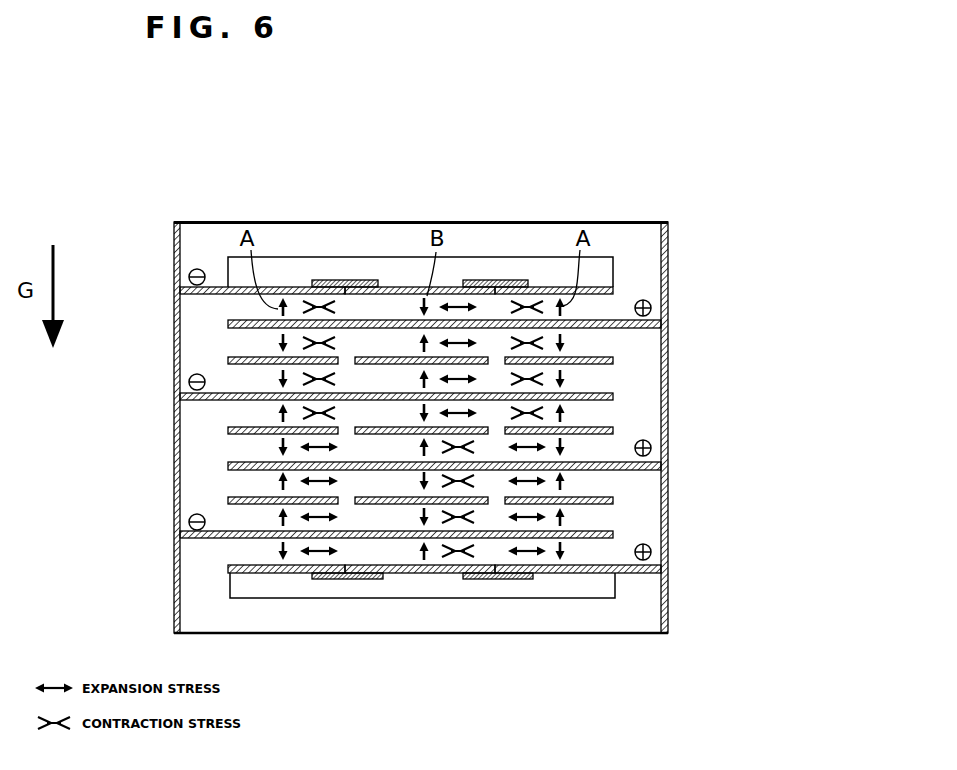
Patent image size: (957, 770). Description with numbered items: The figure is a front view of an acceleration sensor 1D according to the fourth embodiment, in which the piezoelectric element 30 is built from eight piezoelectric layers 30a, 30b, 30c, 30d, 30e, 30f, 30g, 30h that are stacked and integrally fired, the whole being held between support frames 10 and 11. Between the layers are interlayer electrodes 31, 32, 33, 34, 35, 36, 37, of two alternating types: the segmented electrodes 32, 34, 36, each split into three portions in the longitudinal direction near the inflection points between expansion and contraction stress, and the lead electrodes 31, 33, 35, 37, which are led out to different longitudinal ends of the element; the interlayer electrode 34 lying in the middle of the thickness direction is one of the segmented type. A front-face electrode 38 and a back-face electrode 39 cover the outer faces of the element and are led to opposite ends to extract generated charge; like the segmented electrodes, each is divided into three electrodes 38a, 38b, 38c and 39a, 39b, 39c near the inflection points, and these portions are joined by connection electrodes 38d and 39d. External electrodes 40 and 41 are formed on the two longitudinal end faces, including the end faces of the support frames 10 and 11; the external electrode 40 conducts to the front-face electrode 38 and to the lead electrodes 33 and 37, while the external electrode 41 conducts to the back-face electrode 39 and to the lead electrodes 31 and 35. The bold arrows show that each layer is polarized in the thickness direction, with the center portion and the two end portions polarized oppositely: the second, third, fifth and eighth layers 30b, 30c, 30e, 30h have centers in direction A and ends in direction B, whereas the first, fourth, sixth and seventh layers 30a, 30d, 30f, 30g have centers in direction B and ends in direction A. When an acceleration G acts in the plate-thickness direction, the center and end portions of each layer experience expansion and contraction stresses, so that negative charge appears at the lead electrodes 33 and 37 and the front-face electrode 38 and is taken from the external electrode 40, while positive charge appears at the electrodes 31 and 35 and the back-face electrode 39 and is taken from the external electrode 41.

The acceleration sensor 1D is at (671, 203).
The support frame 10 is at (601, 224).
The support frame 11 is at (607, 633).
The piezoelectric element 30 is at (757, 300).
The piezoelectric layer 30a is at (620, 301).
The piezoelectric layer 30b is at (605, 339).
The piezoelectric layer 30c is at (605, 375).
The piezoelectric layer 30d is at (605, 409).
The piezoelectric layer 30e is at (605, 443).
The piezoelectric layer 30f is at (605, 477).
The piezoelectric layer 30g is at (605, 513).
The piezoelectric layer 30h is at (605, 547).
The lead electrode 31 is at (228, 321).
The segmented electrode 32 is at (228, 358).
The lead electrode 33 is at (205, 394).
The segmented electrode 34 is at (228, 429).
The lead electrode 35 is at (228, 465).
The segmented electrode 36 is at (228, 500).
The lead electrode 37 is at (200, 537).
The front-face electrode 38 is at (547, 165).
The divided electrode 38a is at (403, 287).
The divided electrode 38b is at (292, 287).
The divided electrode 38c is at (547, 287).
The connection electrode 38d is at (342, 287).
The back-face electrode 39 is at (548, 697).
The divided electrode 39a is at (417, 573).
The divided electrode 39b is at (288, 573).
The divided electrode 39c is at (557, 573).
The connection electrode 39d is at (347, 579).
The external electrode 40 is at (175, 252).
The external electrode 41 is at (668, 258).